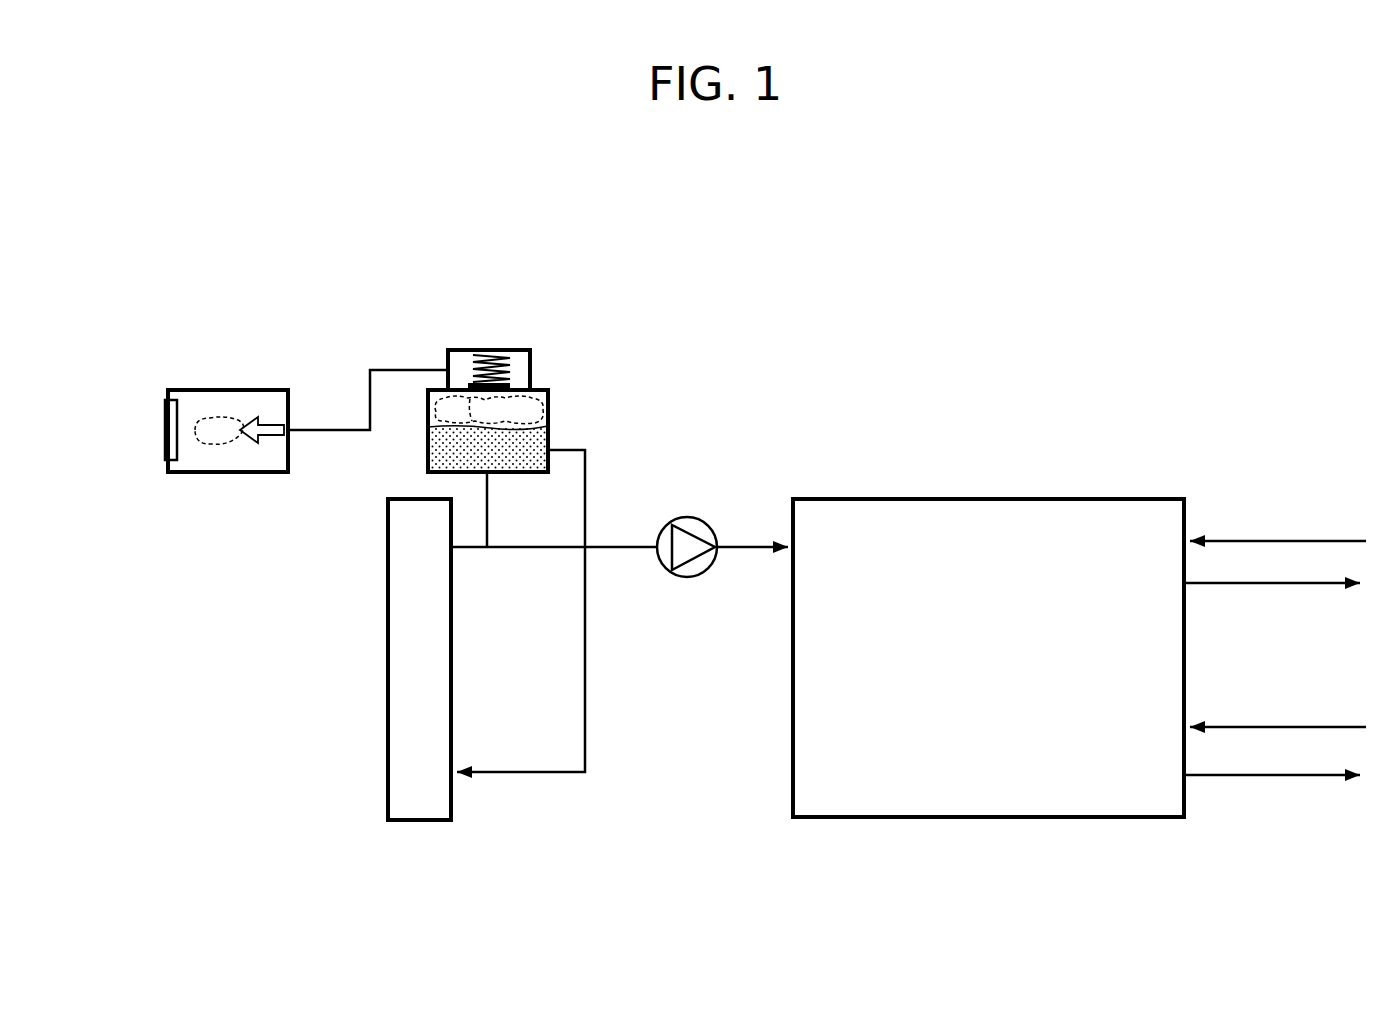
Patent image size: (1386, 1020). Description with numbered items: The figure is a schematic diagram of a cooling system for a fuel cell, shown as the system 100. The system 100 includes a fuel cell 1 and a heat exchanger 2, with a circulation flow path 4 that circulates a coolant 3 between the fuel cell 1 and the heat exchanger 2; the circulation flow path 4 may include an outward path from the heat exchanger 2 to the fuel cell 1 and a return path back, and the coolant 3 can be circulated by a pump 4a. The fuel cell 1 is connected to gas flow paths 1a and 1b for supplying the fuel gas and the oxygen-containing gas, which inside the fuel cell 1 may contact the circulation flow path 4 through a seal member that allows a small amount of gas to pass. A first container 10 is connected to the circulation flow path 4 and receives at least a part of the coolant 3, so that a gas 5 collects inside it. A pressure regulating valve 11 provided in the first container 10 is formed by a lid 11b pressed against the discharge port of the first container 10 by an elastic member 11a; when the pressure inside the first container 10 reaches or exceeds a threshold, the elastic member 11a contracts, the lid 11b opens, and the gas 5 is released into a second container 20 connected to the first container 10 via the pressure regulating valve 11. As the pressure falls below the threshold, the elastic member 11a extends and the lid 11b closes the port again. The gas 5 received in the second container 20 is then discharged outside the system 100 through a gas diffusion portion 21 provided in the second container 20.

The system 100 is at (813, 246).
The fuel cell 1 is at (1092, 822).
The gas flow path 1a is at (1302, 532).
The gas flow path 1b is at (1302, 720).
The heat exchanger 2 is at (420, 823).
The coolant 3 is at (440, 436).
The circulation flow path 4 is at (519, 556).
The pump 4a is at (701, 512).
The gas 5 is at (524, 410).
The first container 10 is at (456, 341).
The pressure regulating valve 11 is at (572, 345).
The elastic member 11a is at (504, 365).
The lid 11b is at (513, 386).
The second container 20 is at (238, 379).
The gas diffusion portion 21 is at (162, 433).